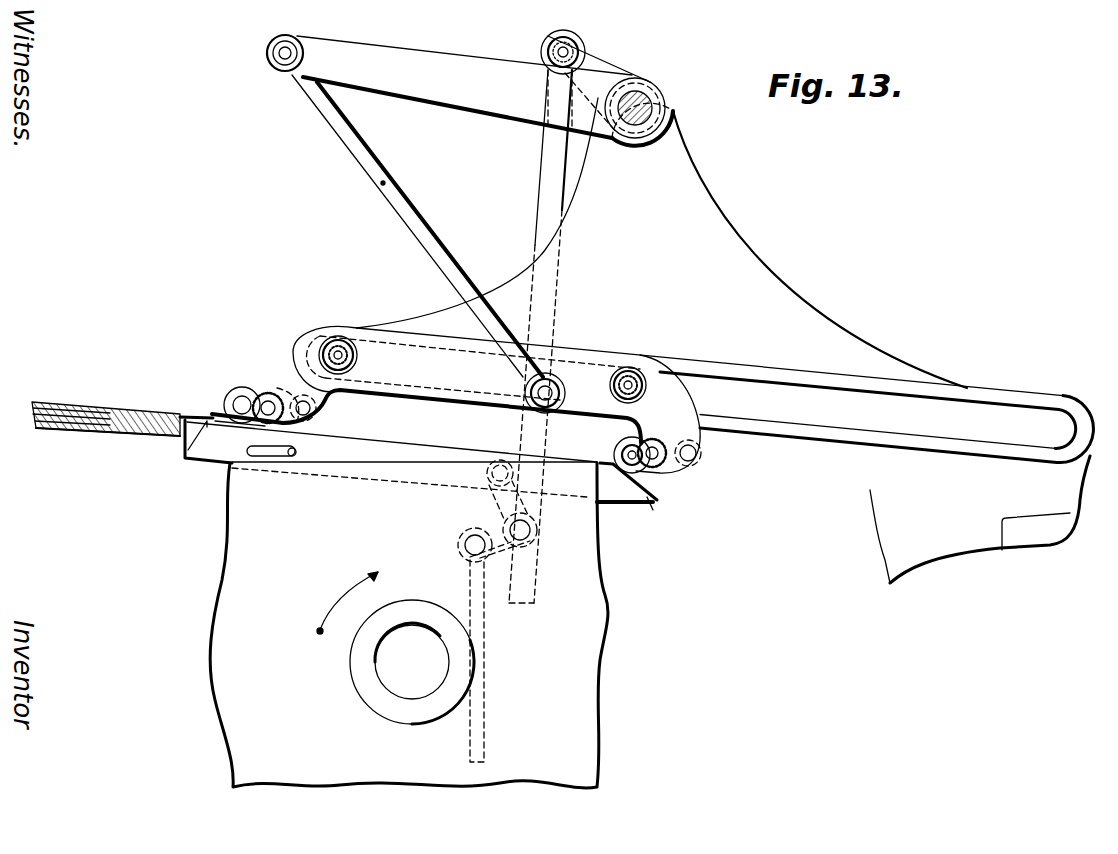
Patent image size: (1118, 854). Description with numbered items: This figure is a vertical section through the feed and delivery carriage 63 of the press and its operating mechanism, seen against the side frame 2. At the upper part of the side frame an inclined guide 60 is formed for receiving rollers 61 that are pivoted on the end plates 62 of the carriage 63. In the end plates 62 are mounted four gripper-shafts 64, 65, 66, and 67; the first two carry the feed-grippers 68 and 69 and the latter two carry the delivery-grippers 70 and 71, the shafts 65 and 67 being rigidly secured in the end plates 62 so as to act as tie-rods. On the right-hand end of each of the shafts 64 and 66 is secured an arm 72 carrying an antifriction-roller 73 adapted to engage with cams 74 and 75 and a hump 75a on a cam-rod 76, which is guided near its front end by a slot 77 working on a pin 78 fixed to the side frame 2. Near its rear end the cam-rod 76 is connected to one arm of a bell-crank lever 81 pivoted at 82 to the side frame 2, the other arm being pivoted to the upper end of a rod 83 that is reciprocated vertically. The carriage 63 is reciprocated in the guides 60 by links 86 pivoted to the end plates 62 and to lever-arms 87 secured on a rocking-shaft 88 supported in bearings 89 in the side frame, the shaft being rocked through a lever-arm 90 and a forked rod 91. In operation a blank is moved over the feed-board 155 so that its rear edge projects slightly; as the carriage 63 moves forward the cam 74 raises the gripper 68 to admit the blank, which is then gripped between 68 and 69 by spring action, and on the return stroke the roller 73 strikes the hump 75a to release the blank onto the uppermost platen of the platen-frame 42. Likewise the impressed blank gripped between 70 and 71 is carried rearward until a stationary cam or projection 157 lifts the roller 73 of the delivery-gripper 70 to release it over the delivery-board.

The side frame 2 is at (723, 340).
The platen-frame 42 is at (430, 758).
The inclined guides 60 is at (794, 381).
The rollers 61 is at (338, 338).
The end plates 62 is at (466, 363).
The feed and delivery carriage 63 is at (462, 408).
The gripper-shaft 64 is at (267, 397).
The gripper-shaft 65 is at (311, 408).
The gripper-shaft 66 is at (698, 449).
The gripper-shaft 67 is at (704, 414).
The feed-gripper 68 is at (230, 410).
The feed-gripper 69 is at (227, 418).
The delivery-gripper 70 is at (626, 458).
The delivery-gripper 71 is at (616, 504).
The arm 72 is at (243, 395).
The antifriction-roller 73 is at (243, 389).
The cam 74 is at (193, 425).
The cam 75 is at (636, 497).
The hump 75a is at (588, 512).
The cam-rod 76 is at (385, 455).
The slot 77 is at (265, 457).
The pin 78 is at (292, 458).
The bell-crank lever 81 is at (506, 520).
The pivot 82 is at (522, 530).
The rod 83 is at (478, 624).
The links 86 is at (349, 137).
The lever-arms 87 is at (449, 86).
The rocking-shaft 88 is at (648, 104).
The bearings 89 is at (655, 84).
The lever-arm 90 is at (607, 70).
The forked rod 91 is at (550, 177).
The feed-board 155 is at (106, 410).
The stationary cam or projection 157 is at (1027, 528).